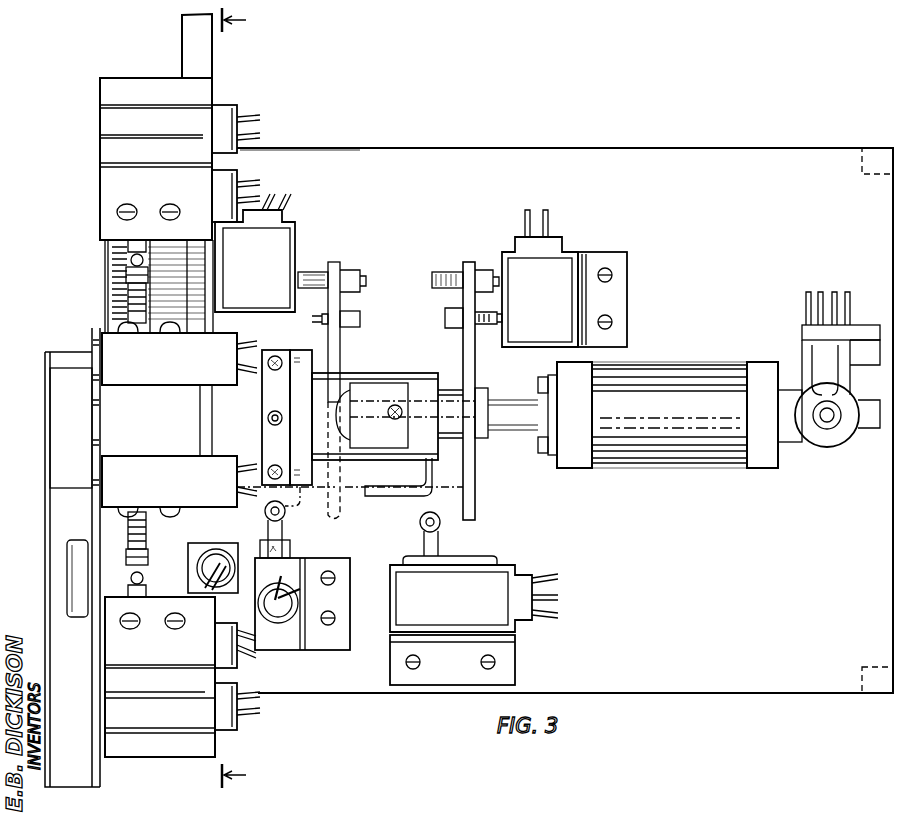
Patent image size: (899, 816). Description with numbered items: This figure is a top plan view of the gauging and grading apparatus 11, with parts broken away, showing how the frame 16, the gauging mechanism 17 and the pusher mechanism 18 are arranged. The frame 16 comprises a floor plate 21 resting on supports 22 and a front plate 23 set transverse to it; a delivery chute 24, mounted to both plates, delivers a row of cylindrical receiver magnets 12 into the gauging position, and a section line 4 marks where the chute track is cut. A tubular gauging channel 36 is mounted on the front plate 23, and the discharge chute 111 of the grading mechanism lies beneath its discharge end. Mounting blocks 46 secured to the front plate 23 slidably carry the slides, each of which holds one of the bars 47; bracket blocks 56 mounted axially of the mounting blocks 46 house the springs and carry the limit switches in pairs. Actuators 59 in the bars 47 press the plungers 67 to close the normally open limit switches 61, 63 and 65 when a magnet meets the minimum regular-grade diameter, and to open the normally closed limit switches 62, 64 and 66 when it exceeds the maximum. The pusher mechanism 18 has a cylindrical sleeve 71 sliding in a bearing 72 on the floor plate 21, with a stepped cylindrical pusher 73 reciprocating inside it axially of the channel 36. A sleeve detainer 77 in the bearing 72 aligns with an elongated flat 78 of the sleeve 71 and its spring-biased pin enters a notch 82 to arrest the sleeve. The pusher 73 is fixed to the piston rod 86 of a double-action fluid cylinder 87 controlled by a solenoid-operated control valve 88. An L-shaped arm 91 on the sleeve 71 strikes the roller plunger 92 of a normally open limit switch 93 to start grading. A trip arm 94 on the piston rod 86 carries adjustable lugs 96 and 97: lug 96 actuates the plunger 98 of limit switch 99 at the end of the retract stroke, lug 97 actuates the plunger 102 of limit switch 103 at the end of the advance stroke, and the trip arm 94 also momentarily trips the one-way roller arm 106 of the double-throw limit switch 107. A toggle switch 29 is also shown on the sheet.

The section line 4- 4 is at (240, 398).
The gauging and grading apparatus 11 is at (680, 90).
The receiver magnet 12 is at (72, 615).
The frame 16 is at (358, 148).
The gauging mechanism 17 is at (100, 245).
The pusher mechanism 18 is at (525, 462).
The floor plate 21 is at (525, 148).
The supports 22 is at (866, 155).
The front plate 23 is at (185, 325).
The delivery chute 24 is at (210, 62).
The toggle switch 29 is at (238, 552).
The tubular gauging channel 36 is at (92, 412).
The mounting blocks 46 is at (110, 315).
The bars 47 is at (122, 305).
The bracket blocks 56 is at (100, 137).
The actuators 59 is at (126, 277).
The normally open limit switch 61 is at (237, 107).
The normally closed limit switch 62 is at (240, 175).
The normally open limit switch 63 is at (233, 337).
The normally closed limit switch 64 is at (186, 462).
The normally open limit switch 65 is at (105, 650).
The normally closed limit switch 66 is at (230, 728).
The plungers 67 is at (128, 261).
The cylindrical sleeve 71 is at (426, 466).
The bearing 72 is at (297, 352).
The stepped cylindrical pusher 73 is at (453, 395).
The sleeve detainer 77 is at (262, 420).
The elongated flat 78 is at (355, 385).
The notch 82 is at (395, 408).
The piston rod 86 is at (520, 400).
The double-action fluid cylinder 87 is at (705, 368).
The solenoid-operated control valve 88 is at (808, 340).
The L-shaped arm 91 is at (297, 498).
The roller plunger 92 is at (283, 536).
The normally open limit switch 93 is at (287, 650).
The trip arm 94 is at (342, 487).
The adjustable lug 96 is at (350, 324).
The adjustable lug 97 is at (357, 270).
The plunger 98 is at (488, 328).
The normally open limit switch 99 is at (565, 240).
The plunger 102 is at (298, 280).
The normally open limit switch 103 is at (293, 232).
The one-way roller arm 106 is at (438, 541).
The single-pole double-throw limit switch 107 is at (532, 560).
The discharge chute 111 is at (42, 440).